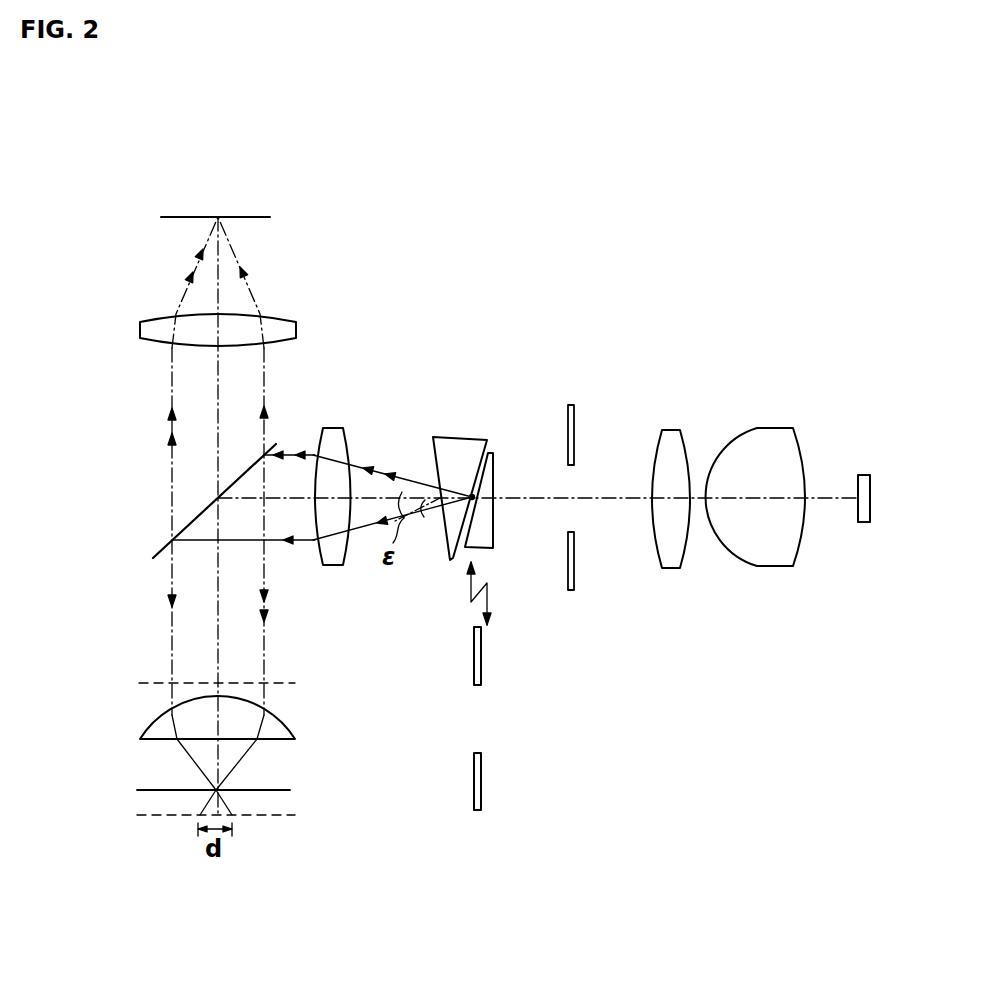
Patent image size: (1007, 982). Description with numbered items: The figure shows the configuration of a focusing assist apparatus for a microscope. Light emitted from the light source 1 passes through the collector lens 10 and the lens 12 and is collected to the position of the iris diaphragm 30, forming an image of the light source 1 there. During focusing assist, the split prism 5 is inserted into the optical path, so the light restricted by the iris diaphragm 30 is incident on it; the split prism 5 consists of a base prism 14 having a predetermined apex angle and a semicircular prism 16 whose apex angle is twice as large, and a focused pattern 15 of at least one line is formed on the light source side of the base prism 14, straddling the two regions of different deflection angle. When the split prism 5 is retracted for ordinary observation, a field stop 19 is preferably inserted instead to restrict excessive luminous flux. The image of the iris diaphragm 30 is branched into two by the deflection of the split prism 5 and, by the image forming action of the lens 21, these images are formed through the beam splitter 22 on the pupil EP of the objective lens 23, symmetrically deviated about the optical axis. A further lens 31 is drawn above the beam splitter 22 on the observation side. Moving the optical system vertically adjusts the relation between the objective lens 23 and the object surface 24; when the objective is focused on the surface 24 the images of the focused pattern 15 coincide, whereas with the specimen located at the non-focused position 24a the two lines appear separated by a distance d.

The light source 1 is at (857, 477).
The collector lens 10 is at (765, 568).
The lens 12 is at (665, 570).
The iris diaphragm 30 is at (570, 590).
The field stop 19 is at (481, 777).
The split prism 5 is at (430, 430).
The base prism 14 is at (445, 552).
The focused pattern 15 is at (472, 497).
The semicircular prism 16 is at (490, 452).
The lens 21 is at (330, 426).
The beam splitter 22 is at (178, 528).
The objective lens 31 is at (278, 316).
The objective lens 23 is at (293, 722).
The object surface 24 is at (280, 790).
The specimen surface position in non-focused state 24a is at (278, 817).
The pupil EP is at (272, 683).